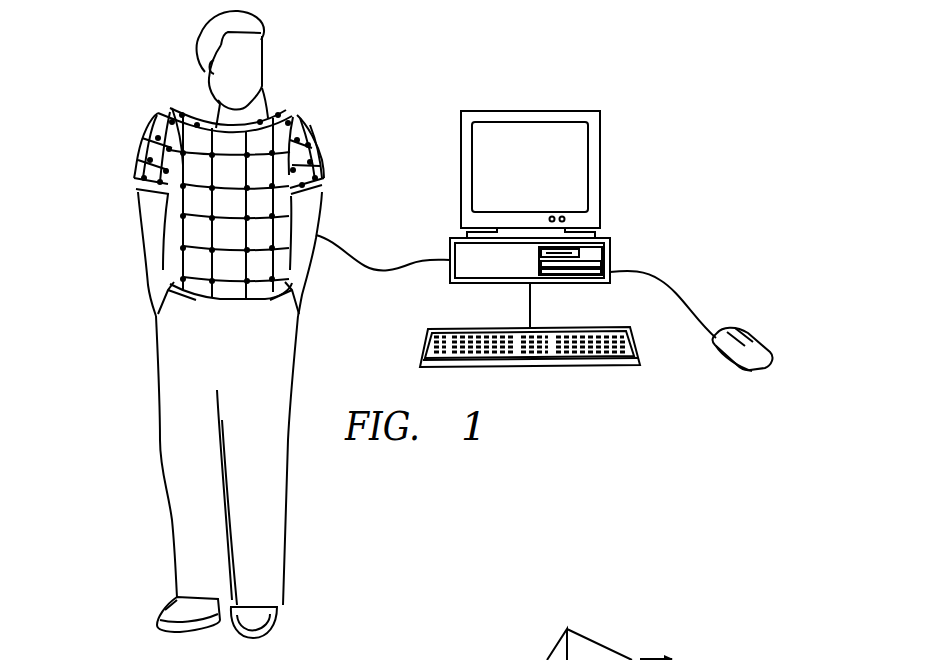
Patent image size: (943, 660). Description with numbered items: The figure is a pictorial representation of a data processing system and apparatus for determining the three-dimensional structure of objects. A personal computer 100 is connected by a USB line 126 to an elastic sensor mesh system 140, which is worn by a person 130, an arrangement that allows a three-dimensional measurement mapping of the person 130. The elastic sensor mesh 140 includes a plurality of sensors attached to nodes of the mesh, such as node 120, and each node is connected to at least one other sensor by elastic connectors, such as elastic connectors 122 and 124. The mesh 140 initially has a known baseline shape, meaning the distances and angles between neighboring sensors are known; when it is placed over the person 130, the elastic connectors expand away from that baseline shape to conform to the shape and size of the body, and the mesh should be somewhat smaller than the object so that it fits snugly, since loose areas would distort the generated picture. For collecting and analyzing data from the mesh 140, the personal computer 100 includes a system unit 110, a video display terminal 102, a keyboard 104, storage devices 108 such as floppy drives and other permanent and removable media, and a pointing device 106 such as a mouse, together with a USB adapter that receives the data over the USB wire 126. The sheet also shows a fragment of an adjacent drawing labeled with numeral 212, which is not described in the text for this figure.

The personal computer 100 is at (708, 93).
The video display terminal 102 is at (461, 167).
The keyboard 104 is at (618, 367).
The pointing device 106 is at (752, 334).
The storage devices 108 is at (611, 266).
The system unit 110 is at (450, 245).
The node 120 is at (182, 114).
The elastic connector 122 is at (305, 125).
The elastic connector 124 is at (157, 126).
The USB line 126 is at (386, 276).
The person 130 is at (130, 228).
The elastic sensor mesh system 140 is at (112, 80).
The output lead 212 is at (645, 658).